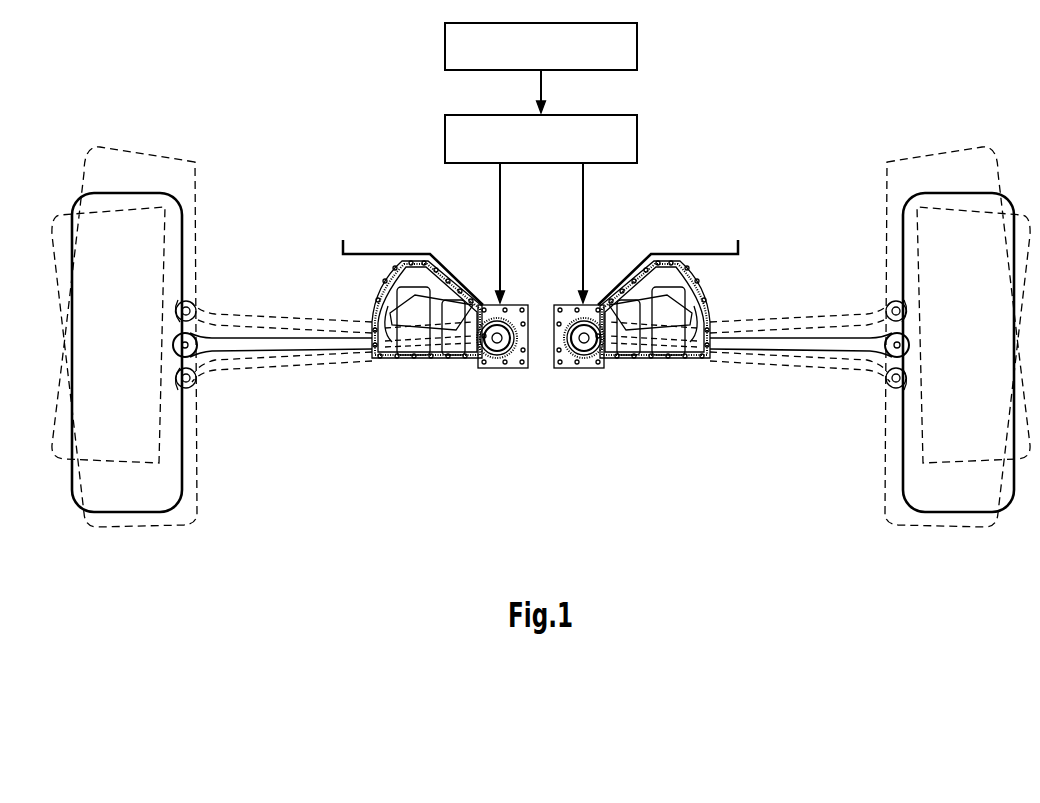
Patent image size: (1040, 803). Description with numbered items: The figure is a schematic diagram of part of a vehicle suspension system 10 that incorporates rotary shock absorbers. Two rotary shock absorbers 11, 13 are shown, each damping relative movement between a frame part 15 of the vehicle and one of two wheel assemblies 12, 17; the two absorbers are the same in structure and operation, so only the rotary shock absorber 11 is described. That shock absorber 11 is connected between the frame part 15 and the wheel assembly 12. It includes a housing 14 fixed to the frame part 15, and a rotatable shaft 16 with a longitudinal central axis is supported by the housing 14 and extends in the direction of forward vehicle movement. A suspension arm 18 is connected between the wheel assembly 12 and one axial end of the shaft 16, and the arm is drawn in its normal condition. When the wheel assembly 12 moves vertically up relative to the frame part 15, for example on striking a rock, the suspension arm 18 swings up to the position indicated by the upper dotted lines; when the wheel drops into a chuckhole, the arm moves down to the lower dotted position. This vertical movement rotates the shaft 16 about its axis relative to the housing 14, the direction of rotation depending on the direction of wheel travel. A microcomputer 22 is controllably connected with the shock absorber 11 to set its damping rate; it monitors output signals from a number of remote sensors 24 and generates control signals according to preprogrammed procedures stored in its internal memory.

The vehicle suspension system 10 is at (857, 95).
The rotary shock absorber 11 is at (616, 392).
The wheel assembly 12 is at (1008, 163).
The rotary shock absorber 13 is at (476, 398).
The housing 14 is at (653, 363).
The frame part 15 is at (365, 254).
The rotatable shaft 16 is at (582, 345).
The wheel assembly 17 is at (91, 130).
The suspension arm 18 is at (822, 352).
The microcomputer 22 is at (632, 138).
The remote sensors 24 is at (622, 53).